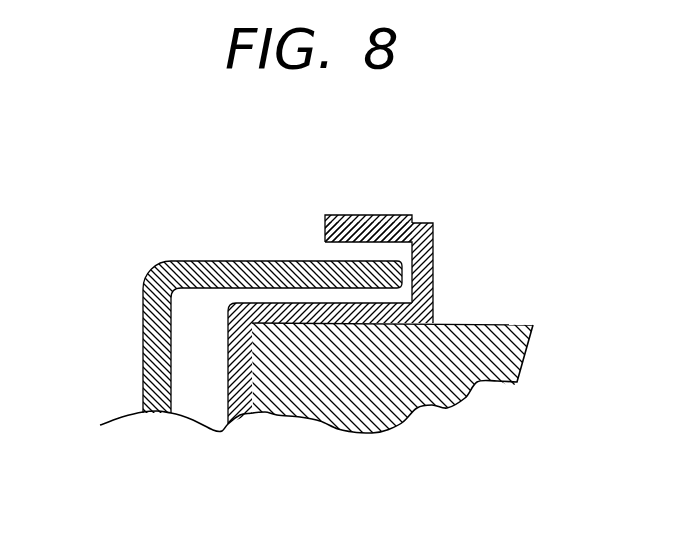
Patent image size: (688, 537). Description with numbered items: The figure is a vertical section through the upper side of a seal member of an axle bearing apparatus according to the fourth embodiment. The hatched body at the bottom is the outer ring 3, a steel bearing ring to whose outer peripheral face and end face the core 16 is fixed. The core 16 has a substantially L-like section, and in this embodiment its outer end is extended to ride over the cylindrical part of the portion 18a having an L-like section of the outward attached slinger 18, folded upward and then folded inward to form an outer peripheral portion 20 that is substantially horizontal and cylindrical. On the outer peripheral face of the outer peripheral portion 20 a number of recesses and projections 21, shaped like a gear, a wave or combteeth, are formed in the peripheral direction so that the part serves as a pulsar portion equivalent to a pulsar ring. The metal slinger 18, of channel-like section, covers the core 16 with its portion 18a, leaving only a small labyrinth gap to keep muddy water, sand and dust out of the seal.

The outer ring 3 is at (445, 377).
The core 16 is at (253, 305).
The outward attached slinger 18 is at (150, 267).
The portion having a section in an L-like shape 18a is at (313, 262).
The outer peripheral portion 20 is at (323, 228).
The recesses and projections 21 is at (375, 215).